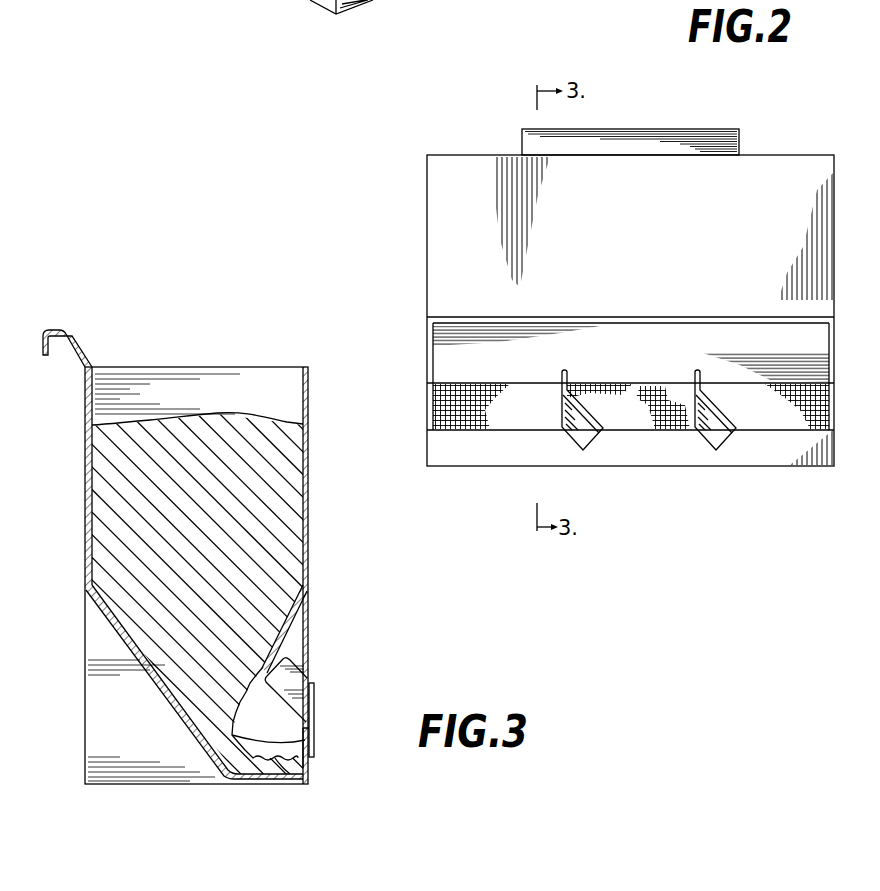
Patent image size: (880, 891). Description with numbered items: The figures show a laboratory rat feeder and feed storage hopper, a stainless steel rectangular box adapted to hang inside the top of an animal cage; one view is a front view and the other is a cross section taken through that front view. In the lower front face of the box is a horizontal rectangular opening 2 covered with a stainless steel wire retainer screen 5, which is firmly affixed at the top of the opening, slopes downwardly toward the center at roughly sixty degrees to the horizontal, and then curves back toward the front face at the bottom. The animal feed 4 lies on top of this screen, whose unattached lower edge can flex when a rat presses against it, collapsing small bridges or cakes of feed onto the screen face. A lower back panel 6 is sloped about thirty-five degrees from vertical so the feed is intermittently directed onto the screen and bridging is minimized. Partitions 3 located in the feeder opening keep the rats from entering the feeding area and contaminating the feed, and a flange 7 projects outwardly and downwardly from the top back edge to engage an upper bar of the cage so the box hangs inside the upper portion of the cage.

In FIG. 3, the horizontal rectangular opening 2 is at (295, 637).
In FIG. 2, the partitions 3 is at (717, 437).
In FIG. 3, the partitions 3 is at (293, 680).
In FIG. 3, the animal feed 4 is at (231, 417).
In FIG. 2, the wire retainer screen 5 is at (653, 403).
In FIG. 3, the wire retainer screen 5 is at (312, 740).
In FIG. 3, the lower back panel 6 is at (116, 634).
In FIG. 2, the flange 7 is at (732, 140).
In FIG. 3, the flange 7 is at (80, 340).